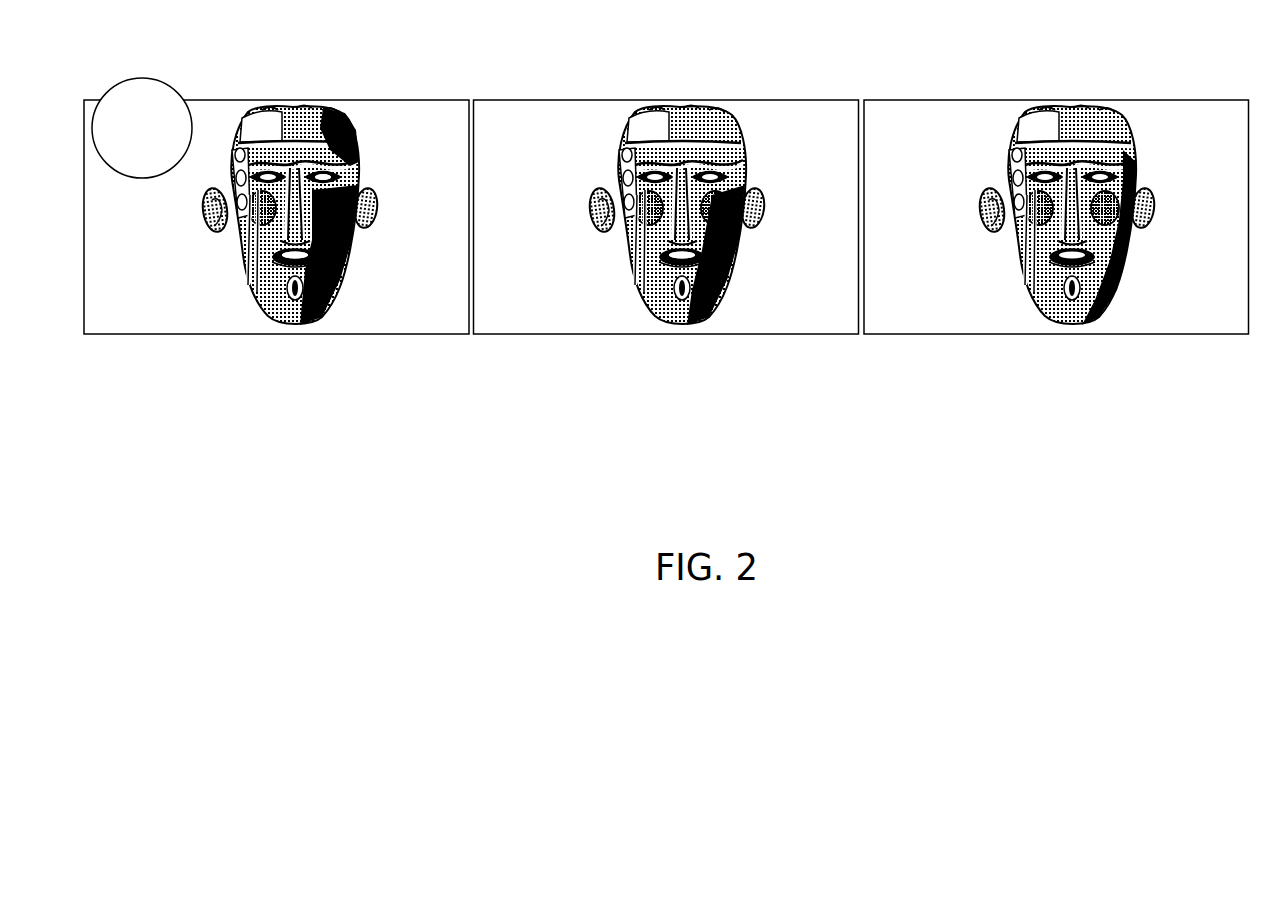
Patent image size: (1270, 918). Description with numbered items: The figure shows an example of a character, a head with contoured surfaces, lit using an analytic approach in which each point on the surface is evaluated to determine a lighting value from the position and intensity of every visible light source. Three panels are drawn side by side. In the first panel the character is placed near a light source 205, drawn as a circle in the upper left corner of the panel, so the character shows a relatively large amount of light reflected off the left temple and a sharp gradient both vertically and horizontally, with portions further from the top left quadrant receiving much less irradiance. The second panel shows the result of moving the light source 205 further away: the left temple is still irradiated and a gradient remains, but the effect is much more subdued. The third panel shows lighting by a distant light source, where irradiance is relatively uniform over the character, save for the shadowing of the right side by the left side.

The light source 205 is at (167, 81).